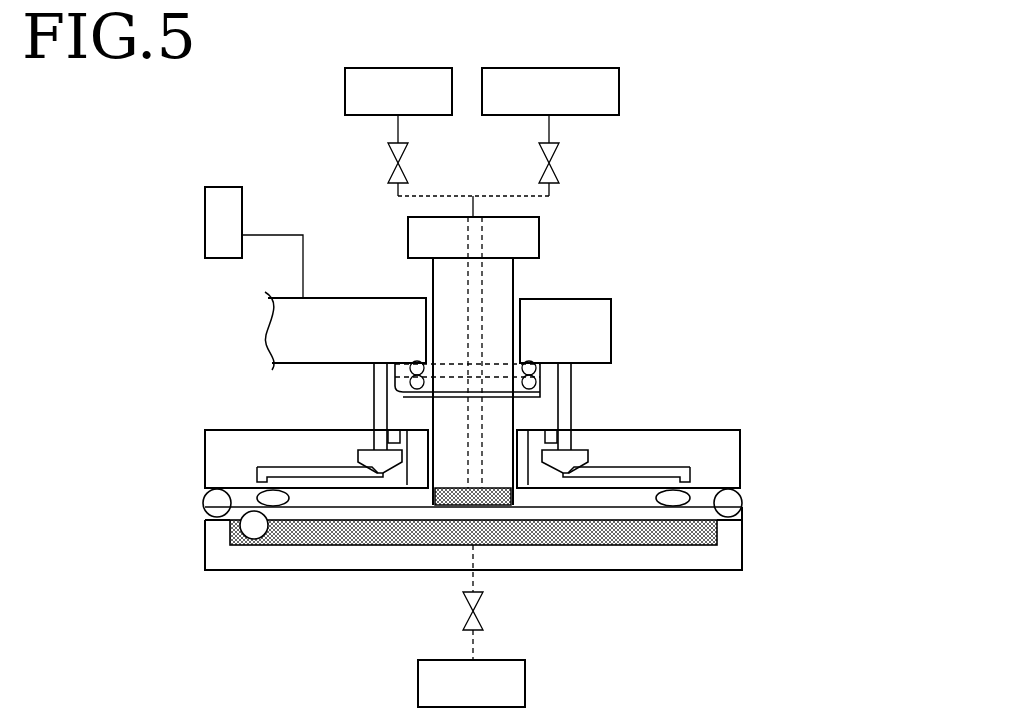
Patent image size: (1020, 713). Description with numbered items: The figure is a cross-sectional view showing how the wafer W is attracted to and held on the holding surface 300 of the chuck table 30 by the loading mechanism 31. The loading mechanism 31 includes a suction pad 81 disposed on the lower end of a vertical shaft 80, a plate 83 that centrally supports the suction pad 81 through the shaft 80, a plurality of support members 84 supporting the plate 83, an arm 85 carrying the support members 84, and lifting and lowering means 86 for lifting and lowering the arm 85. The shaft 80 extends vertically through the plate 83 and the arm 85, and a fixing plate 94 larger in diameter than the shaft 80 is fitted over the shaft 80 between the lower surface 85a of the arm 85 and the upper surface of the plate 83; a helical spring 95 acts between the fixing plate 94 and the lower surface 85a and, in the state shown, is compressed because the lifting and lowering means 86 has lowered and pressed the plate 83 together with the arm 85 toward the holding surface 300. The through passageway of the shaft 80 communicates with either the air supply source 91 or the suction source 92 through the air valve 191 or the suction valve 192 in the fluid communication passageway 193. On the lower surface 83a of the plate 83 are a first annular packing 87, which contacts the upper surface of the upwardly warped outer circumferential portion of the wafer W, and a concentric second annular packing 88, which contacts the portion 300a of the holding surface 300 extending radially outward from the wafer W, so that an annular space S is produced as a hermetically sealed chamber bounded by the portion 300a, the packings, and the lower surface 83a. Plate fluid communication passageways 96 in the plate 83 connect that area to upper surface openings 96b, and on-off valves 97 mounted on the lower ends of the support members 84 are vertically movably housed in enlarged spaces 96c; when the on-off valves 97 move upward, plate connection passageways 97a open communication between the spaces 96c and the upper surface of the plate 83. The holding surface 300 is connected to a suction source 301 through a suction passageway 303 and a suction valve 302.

The suction source 92 is at (345, 88).
The air supply source 91 is at (619, 91).
The suction valve 192 is at (390, 160).
The air valve 191 is at (555, 160).
The fluid communication passageway 193 is at (469, 184).
The lifting and lowering means 86 is at (222, 192).
The loading mechanism 31 is at (652, 266).
The shaft 80 is at (513, 280).
The arm 85 is at (600, 320).
The lower surface of the arm 85a is at (272, 365).
The support members 84 is at (374, 378).
The helical spring 95 is at (415, 363).
The fixing plate 94 is at (398, 372).
The plate 83 is at (745, 455).
The upper surface openings 96b is at (585, 420).
The spaces 96c is at (352, 448).
The plate fluid communication passageways 96 is at (685, 458).
The on-off valves 97 is at (357, 455).
The plate connection passageways 97a is at (420, 440).
The suction pad 81 is at (497, 487).
The first annular packing 87 is at (240, 486).
The annular space S is at (232, 490).
The wafer W is at (296, 486).
The second annular packing 88 is at (204, 503).
The lower surface of the plate 83a is at (697, 508).
The chuck table 30 is at (745, 555).
The holding surface 300 is at (637, 510).
The portion of the holding surface 300a is at (262, 540).
The suction valve 302 is at (465, 598).
The suction passageway 303 is at (473, 660).
The suction source 301 is at (525, 675).